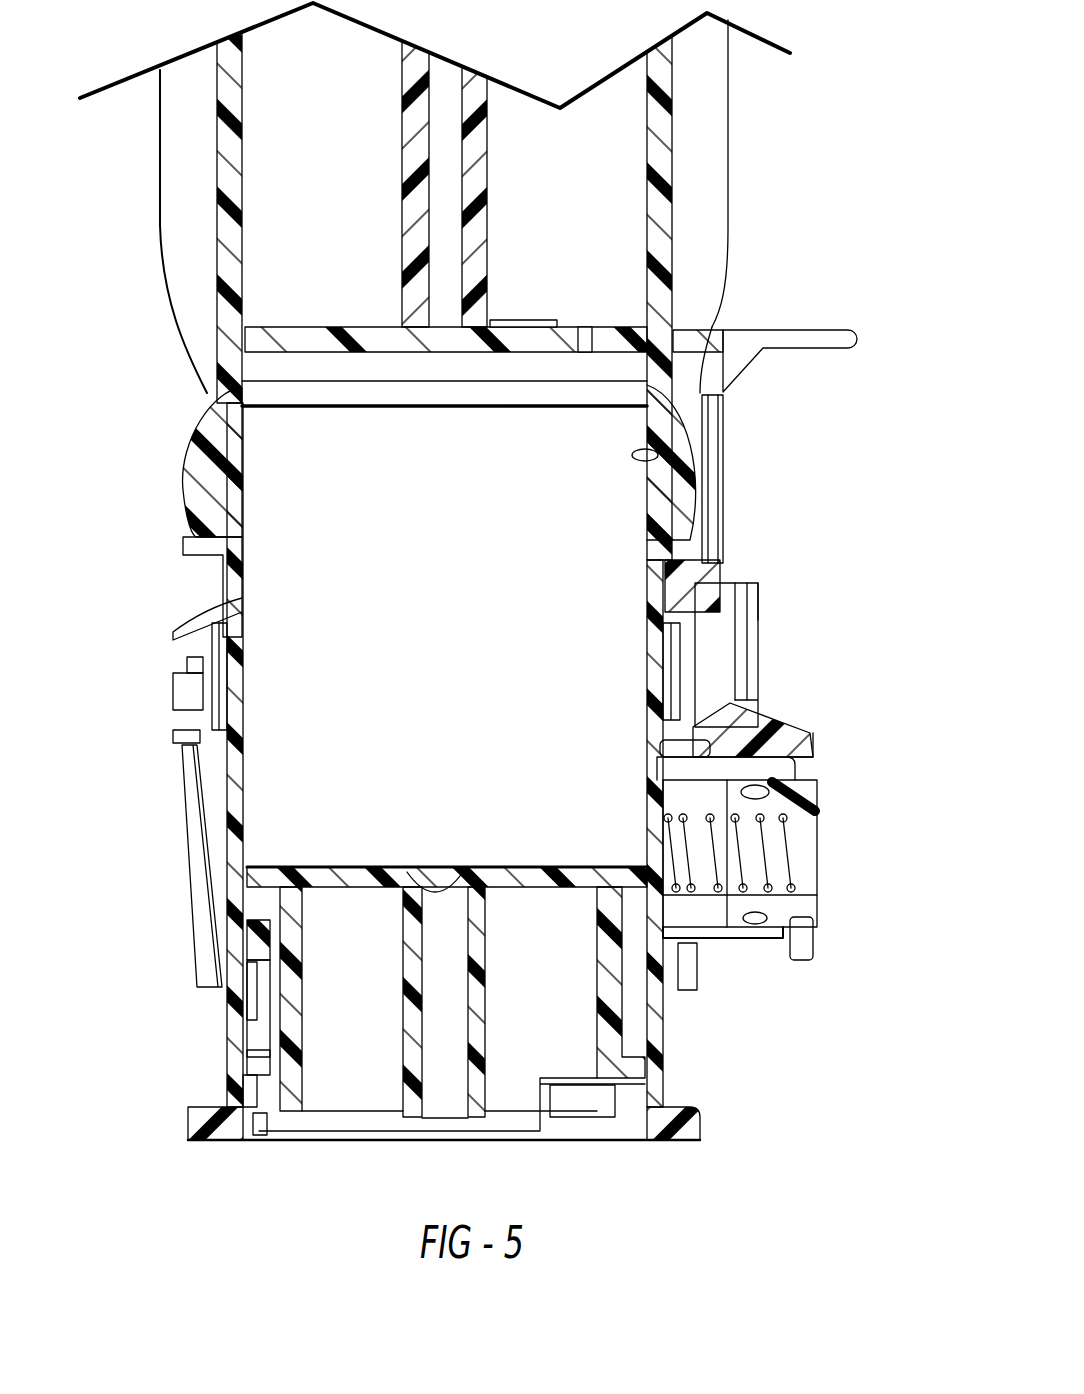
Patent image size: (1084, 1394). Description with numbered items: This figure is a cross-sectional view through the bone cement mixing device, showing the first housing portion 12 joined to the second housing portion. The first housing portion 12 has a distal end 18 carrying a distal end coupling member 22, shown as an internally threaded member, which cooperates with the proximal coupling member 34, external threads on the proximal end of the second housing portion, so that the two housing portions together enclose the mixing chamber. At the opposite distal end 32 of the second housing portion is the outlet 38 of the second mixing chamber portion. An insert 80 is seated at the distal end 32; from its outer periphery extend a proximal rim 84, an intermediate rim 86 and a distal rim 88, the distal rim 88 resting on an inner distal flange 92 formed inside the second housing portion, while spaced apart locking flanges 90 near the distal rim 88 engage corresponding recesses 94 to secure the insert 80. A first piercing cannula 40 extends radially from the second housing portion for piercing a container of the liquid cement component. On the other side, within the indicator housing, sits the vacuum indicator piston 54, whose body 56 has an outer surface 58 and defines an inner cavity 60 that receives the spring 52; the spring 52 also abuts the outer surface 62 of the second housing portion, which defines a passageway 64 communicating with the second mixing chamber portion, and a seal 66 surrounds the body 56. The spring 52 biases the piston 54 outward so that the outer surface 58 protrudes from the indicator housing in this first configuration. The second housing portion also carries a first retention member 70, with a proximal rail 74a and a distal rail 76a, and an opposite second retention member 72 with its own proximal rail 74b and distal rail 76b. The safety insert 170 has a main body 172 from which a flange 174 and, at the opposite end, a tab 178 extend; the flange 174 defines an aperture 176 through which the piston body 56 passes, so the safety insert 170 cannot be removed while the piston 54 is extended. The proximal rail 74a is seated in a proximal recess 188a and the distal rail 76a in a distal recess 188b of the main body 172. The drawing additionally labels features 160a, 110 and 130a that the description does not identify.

The first housing portion 12 is at (660, 163).
The housing wall 160a is at (712, 78).
The partition plate 110 is at (603, 337).
The distal end 18 is at (737, 378).
The tab 178 is at (840, 340).
The distal end coupling member 22 is at (727, 404).
The proximal coupling member 34 is at (660, 447).
The proximal rail 74a is at (688, 615).
The proximal recess 188a is at (723, 667).
The first retention member 70 is at (692, 660).
The main body 172 is at (733, 635).
The distal recess 188b is at (753, 723).
The safety insert 170 is at (757, 730).
The body 56 is at (810, 752).
The aperture 176 is at (790, 782).
The outer surface 58 is at (817, 817).
The piston 54 is at (757, 848).
The inner cavity 60 is at (773, 877).
The flange 174 is at (803, 947).
The seal 66 is at (755, 922).
The spring 52 is at (717, 937).
The outer surface 62 is at (700, 947).
The first piercing cannula 40 is at (444, 665).
The passageway 64 is at (653, 850).
The distal rail 76a is at (667, 757).
The proximal rail 74b is at (173, 633).
The second retention member 72 is at (200, 683).
The distal rail 76b is at (180, 737).
The arm 130a is at (182, 810).
The proximal rim 84 is at (245, 913).
The insert 80 is at (280, 940).
The intermediate rim 86 is at (257, 973).
The distal rim 88 is at (260, 1062).
The inner distal flange 92 is at (257, 1085).
The recesses 94 is at (238, 1142).
The locking flanges 90 is at (274, 1121).
The outlet 38 is at (450, 1140).
The distal end 32 is at (665, 1142).